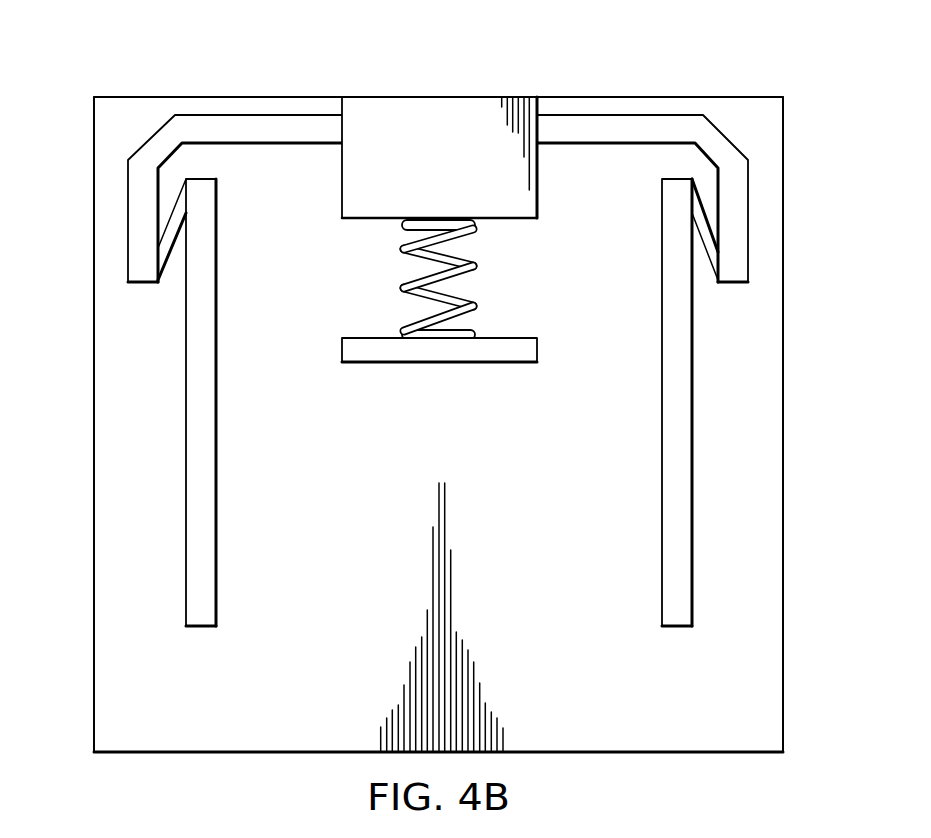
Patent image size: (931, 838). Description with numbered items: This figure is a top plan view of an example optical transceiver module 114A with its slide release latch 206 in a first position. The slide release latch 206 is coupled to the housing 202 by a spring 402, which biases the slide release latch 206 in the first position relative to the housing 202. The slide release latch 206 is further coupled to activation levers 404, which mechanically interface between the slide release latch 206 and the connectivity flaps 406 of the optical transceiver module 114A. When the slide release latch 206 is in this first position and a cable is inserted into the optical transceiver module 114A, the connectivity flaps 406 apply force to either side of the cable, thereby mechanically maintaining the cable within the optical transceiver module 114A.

The optical transceiver module 114A is at (138, 74).
The housing 202 is at (245, 97).
The activation levers 404 is at (128, 198).
The slide release latch 206 is at (342, 176).
The connectivity flaps 406 is at (186, 448).
The spring 402 is at (475, 270).